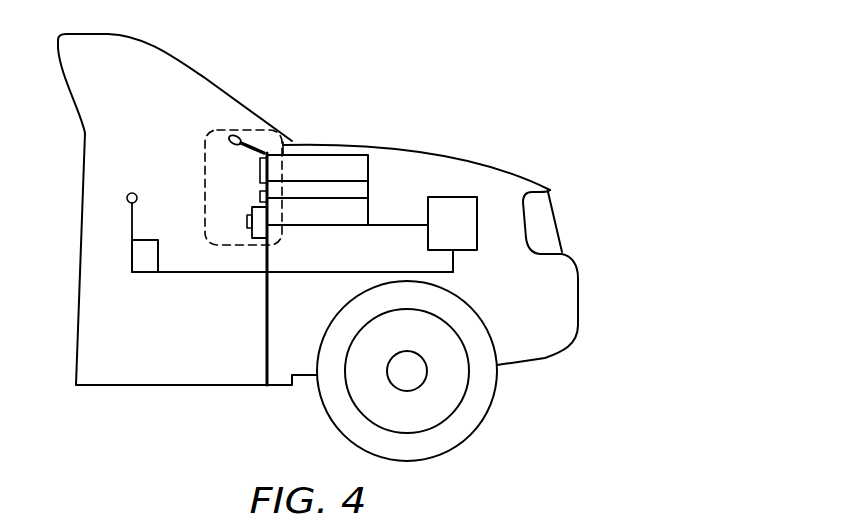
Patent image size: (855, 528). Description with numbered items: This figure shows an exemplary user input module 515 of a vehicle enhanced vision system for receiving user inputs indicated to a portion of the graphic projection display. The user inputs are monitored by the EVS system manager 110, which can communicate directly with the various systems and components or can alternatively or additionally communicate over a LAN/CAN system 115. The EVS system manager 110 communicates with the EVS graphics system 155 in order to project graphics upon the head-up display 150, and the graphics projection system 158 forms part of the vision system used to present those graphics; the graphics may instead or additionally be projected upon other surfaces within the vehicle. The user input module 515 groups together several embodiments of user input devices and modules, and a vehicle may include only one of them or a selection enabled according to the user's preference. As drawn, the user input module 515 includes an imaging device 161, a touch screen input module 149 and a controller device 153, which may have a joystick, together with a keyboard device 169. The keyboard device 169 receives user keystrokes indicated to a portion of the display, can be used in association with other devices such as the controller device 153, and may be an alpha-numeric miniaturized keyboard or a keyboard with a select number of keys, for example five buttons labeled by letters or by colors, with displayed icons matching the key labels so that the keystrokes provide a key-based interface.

The EVS system manager 110 is at (463, 227).
The LAN/CAN system 115 is at (177, 277).
The touch screen input module 149 is at (259, 176).
The head-up display 150 is at (217, 89).
The controller device 153 is at (252, 139).
The EVS graphics system 155 is at (143, 260).
The graphics projection system 158 is at (127, 197).
The imaging device 161 is at (247, 235).
The keyboard device 169 is at (258, 198).
The user input module 515 is at (298, 142).